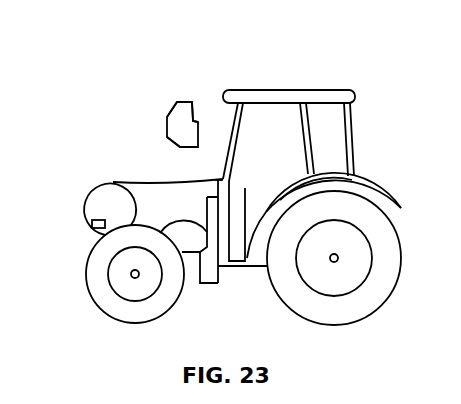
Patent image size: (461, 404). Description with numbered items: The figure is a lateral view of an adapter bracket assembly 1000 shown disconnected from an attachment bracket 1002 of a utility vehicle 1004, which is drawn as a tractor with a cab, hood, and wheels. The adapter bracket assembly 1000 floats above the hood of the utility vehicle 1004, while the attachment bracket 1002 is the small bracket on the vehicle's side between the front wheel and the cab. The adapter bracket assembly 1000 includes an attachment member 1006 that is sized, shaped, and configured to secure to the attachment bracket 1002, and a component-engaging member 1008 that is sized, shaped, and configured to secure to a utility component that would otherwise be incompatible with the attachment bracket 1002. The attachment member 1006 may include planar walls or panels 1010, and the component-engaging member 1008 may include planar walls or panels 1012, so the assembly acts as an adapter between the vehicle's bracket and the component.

The adapter bracket assembly 1000 is at (157, 83).
The attachment bracket 1002 is at (207, 255).
The utility vehicle 1004 is at (113, 182).
The attachment member 1006 is at (199, 130).
The component-engaging member 1008 is at (167, 118).
The planar walls or panels 1010 is at (196, 114).
The planar walls or panels 1012 is at (170, 142).